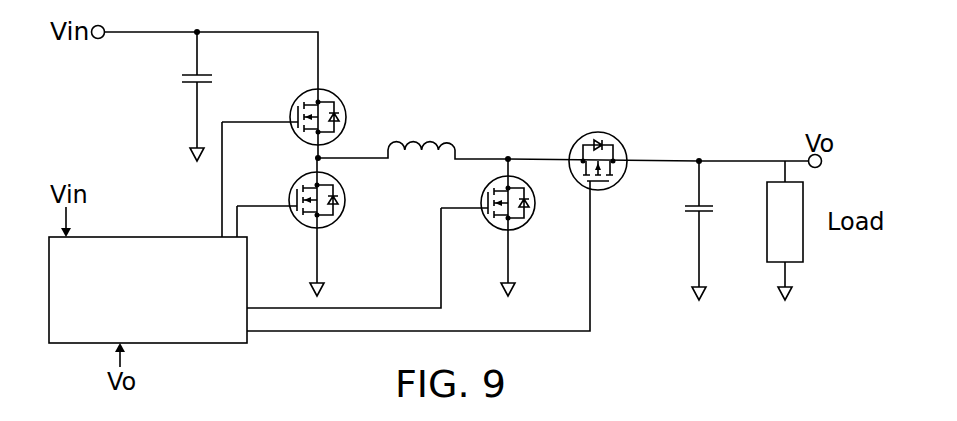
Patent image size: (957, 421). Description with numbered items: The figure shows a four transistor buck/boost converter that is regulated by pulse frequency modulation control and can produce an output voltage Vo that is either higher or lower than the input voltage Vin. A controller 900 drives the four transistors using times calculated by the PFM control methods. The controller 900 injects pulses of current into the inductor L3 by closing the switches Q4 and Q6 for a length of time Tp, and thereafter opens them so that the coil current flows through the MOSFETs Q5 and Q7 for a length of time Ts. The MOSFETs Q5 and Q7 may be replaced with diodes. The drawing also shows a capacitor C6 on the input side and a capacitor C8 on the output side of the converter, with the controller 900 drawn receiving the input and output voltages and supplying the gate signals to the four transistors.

The controller 900 is at (135, 237).
The switch Q4 is at (284, 161).
The MOSFET Q5 is at (291, 227).
The switch Q6 is at (391, 233).
The MOSFET Q7 is at (437, 220).
The inductor L3 is at (413, 135).
The input capacitor C6 is at (209, 96).
The output capacitor C8 is at (686, 230).